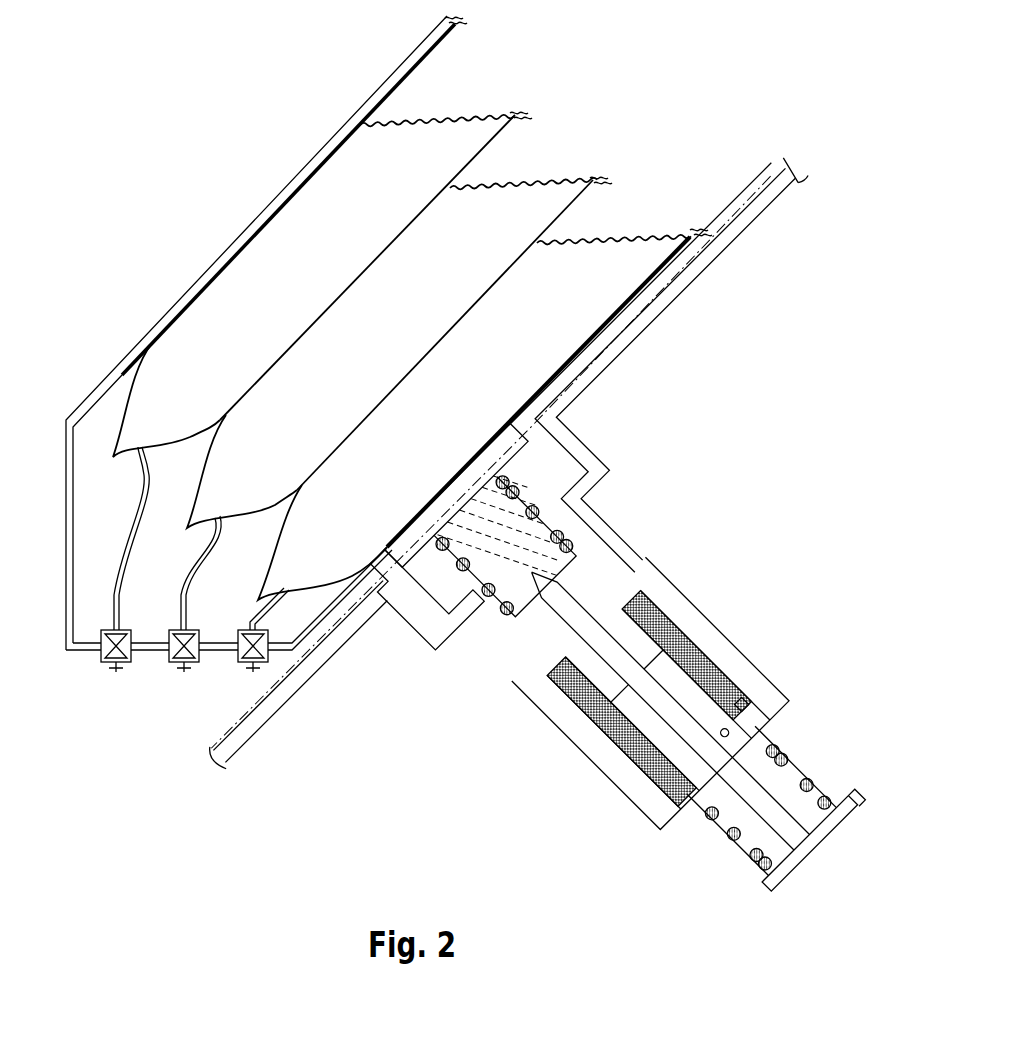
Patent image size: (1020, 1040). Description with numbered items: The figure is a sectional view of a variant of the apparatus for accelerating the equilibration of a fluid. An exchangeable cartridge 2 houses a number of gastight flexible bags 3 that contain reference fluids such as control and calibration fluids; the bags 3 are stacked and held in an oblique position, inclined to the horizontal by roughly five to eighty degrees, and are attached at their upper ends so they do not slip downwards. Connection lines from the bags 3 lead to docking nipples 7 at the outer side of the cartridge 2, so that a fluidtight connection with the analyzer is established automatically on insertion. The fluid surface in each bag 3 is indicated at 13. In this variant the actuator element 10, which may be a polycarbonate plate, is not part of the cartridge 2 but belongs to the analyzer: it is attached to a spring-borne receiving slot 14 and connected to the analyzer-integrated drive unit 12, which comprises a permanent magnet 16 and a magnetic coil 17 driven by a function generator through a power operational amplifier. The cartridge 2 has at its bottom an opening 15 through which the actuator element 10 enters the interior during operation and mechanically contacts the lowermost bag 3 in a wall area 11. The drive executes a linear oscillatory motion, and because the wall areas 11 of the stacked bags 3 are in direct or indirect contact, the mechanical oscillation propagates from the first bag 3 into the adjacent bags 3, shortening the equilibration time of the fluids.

The cartridge 2 is at (265, 197).
The flexible bag 3 is at (200, 372).
The docking nipple 7 is at (115, 674).
The actuator element 10 is at (485, 463).
The wall area 11 is at (314, 300).
The drive unit 12 is at (718, 630).
The fluid surface 13 is at (435, 118).
The spring-borne receiving slot 14 is at (570, 540).
The opening 15 is at (387, 583).
The permanent magnet 16 is at (729, 733).
The magnetic coil 17 is at (745, 707).